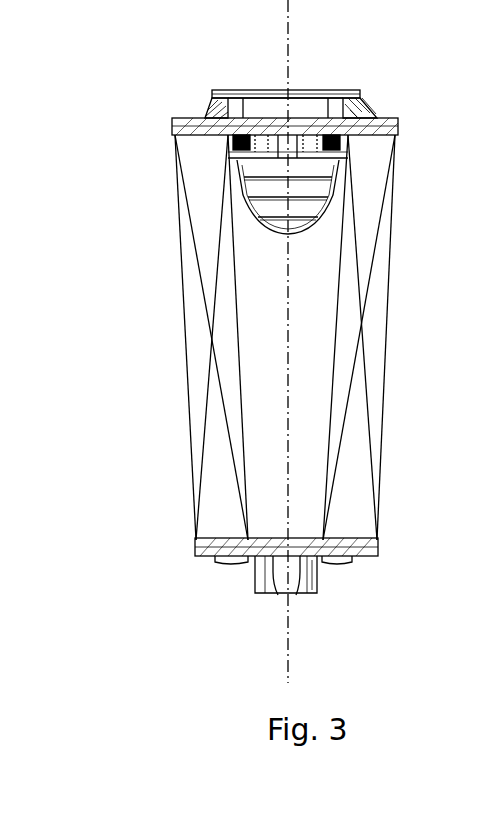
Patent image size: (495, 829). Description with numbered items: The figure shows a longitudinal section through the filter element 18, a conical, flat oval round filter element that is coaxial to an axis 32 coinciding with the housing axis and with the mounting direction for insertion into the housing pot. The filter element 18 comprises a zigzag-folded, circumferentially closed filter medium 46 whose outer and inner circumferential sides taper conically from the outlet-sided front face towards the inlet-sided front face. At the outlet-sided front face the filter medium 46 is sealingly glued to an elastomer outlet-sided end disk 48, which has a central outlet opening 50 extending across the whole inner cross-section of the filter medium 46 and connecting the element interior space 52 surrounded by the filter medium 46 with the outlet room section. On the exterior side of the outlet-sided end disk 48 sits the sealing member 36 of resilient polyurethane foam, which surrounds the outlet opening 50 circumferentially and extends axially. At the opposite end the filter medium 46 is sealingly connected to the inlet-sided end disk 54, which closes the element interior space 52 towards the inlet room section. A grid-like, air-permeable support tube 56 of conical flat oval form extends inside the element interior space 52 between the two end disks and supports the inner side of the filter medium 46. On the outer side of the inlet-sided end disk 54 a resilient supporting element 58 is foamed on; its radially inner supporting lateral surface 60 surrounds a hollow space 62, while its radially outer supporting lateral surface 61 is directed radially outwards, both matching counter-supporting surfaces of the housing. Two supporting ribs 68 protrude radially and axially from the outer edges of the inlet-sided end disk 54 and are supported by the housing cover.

The filter element 18 is at (117, 136).
The axis 32 is at (291, 7).
The sealing member 36 is at (218, 103).
The outlet opening 50 is at (268, 127).
The outlet-sided end disk 48 is at (388, 127).
The support tube 56 is at (258, 160).
The filter medium 46 is at (200, 338).
The element interior space 52 is at (328, 337).
The inlet-sided end disk 54 is at (200, 547).
The supporting ribs 68 is at (262, 568).
The supporting element 58 is at (260, 570).
The hollow space 62 is at (280, 573).
The radially inner supporting lateral surface 60 is at (292, 572).
The radially outer supporting lateral surface 61 is at (318, 573).